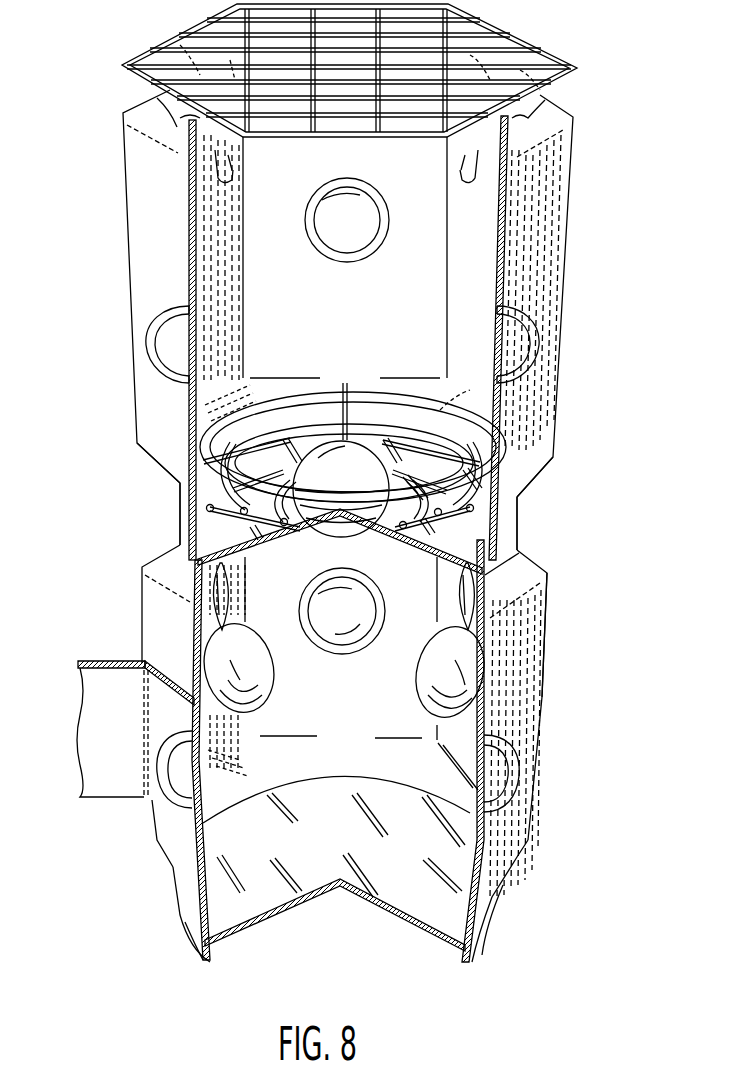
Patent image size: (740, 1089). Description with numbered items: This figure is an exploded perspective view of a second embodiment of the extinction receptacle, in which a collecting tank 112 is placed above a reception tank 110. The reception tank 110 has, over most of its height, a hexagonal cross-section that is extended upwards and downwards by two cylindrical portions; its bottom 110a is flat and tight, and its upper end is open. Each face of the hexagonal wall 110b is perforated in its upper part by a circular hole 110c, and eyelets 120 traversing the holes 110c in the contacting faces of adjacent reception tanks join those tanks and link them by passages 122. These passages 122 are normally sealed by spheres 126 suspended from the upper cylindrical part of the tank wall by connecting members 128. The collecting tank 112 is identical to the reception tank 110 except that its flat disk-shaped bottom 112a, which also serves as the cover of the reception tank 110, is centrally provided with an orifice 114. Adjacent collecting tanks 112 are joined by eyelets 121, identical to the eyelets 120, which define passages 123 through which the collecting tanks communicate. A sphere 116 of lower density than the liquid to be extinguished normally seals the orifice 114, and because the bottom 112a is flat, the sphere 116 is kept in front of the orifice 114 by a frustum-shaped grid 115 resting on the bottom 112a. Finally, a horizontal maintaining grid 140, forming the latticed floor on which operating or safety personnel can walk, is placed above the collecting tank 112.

The horizontal maintaining grid 140 is at (531, 47).
The collecting tank 112 is at (572, 223).
The passage 123 is at (197, 232).
The eyelet 121 is at (150, 330).
The sphere 116 is at (347, 460).
The frustum-shaped grid 115 is at (497, 395).
The bottom of collecting tank 112a is at (182, 485).
The orifice 114 is at (363, 543).
The connecting member 128 is at (224, 572).
The reception tank 110 is at (548, 613).
The sphere 126 is at (417, 673).
The passage 122 is at (470, 762).
The eyelet 120 is at (517, 747).
The hexagonal wall 110b is at (522, 680).
The circular hole 110c is at (507, 797).
The bottom of reception tank 110a is at (426, 910).